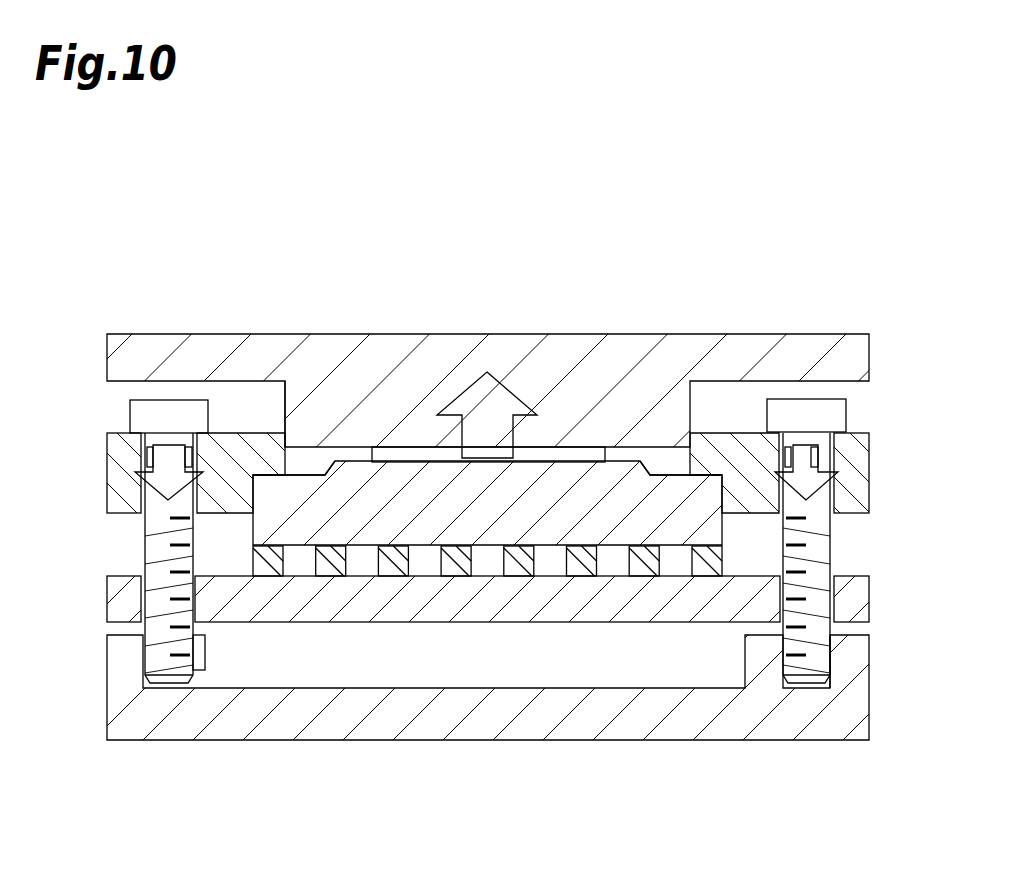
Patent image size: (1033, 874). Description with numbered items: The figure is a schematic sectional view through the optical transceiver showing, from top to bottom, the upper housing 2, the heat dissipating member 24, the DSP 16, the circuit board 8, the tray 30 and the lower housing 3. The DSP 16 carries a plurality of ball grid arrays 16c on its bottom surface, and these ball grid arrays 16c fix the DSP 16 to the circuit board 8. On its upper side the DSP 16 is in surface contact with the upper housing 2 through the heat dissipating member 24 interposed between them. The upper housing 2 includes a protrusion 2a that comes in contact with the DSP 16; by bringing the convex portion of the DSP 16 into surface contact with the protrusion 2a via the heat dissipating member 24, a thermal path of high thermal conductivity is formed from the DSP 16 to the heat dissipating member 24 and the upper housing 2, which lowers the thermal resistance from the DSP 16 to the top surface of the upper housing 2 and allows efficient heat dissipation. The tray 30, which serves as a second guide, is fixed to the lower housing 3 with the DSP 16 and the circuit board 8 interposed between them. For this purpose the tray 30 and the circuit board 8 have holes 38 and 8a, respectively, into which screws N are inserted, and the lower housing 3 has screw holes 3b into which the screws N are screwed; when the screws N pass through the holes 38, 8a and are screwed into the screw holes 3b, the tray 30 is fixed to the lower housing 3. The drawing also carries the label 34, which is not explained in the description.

The upper housing 2 is at (323, 333).
The protrusion 2a is at (285, 410).
The screws N is at (170, 413).
The heat dissipating member 24 is at (596, 458).
The tray 30 is at (705, 425).
The DSP 16 is at (712, 467).
The ball grid arrays 16c is at (257, 582).
The ledge / gap portion 34 is at (285, 462).
The holes 38 is at (145, 510).
The circuit board 8 is at (487, 625).
The holes 8a is at (145, 608).
The lower housing 3 is at (470, 742).
The screw holes 3b is at (145, 642).